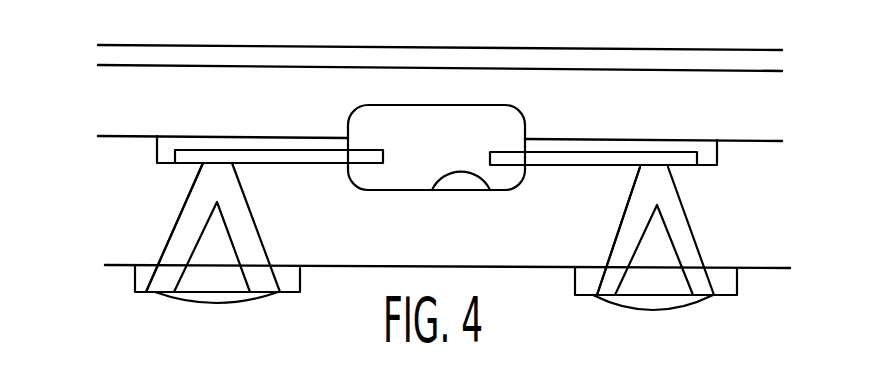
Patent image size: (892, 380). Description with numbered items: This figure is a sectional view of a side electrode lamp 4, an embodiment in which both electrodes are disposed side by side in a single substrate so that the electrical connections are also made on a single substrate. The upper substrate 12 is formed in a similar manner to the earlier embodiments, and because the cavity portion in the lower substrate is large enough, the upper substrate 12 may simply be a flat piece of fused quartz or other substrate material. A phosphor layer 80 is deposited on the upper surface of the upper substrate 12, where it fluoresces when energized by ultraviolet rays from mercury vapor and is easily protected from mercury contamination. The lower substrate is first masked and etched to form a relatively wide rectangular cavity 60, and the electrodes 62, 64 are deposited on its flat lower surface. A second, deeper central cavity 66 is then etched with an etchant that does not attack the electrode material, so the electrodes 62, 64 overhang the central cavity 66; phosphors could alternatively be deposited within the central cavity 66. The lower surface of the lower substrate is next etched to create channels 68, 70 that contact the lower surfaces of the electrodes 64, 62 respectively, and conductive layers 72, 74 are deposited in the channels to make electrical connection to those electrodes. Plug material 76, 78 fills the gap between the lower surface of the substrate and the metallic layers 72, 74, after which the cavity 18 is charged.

The side electrode lamp 4 is at (128, 185).
The upper substrate 12 is at (757, 100).
The cavity 18 is at (522, 110).
The rectangular cavity 60 is at (717, 165).
The electrode 62 is at (287, 163).
The electrode 64 is at (567, 165).
The central cavity 66 is at (378, 185).
The channel 68 is at (263, 225).
The channel 70 is at (615, 230).
The conductive layer 72 is at (685, 220).
The conductive layer 74 is at (172, 240).
The plug material 76 is at (215, 297).
The plug material 78 is at (658, 312).
The phosphor layer 80 is at (688, 56).